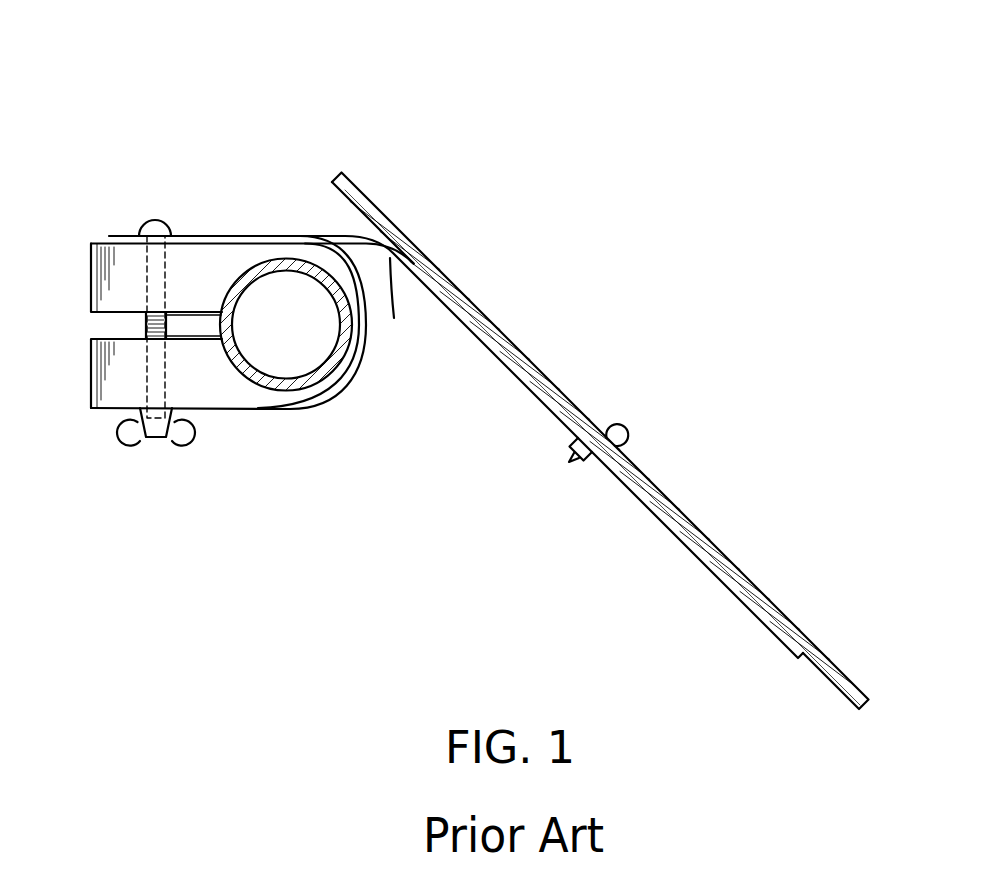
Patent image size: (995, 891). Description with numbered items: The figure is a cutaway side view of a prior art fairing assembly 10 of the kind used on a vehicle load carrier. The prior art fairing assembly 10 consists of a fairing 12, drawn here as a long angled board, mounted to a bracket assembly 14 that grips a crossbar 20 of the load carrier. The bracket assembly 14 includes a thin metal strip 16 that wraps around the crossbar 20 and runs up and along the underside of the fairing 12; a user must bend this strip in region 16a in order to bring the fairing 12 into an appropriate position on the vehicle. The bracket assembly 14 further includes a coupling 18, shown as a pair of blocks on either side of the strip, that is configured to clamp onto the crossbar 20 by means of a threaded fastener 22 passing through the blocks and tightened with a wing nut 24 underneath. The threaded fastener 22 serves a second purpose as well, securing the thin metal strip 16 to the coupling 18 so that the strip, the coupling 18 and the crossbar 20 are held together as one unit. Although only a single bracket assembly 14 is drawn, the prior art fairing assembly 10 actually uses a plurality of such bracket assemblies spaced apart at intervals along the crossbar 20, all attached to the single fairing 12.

The prior art fairing assembly 10 is at (267, 118).
The fairing 12 is at (374, 203).
The bracket assembly 14 is at (97, 218).
The thin metal strip 16 is at (206, 236).
The region 16a is at (394, 318).
The coupling 18 is at (90, 386).
The crossbar 20 is at (262, 381).
The threaded fastener 22 is at (145, 332).
The wing nut 24 is at (119, 437).